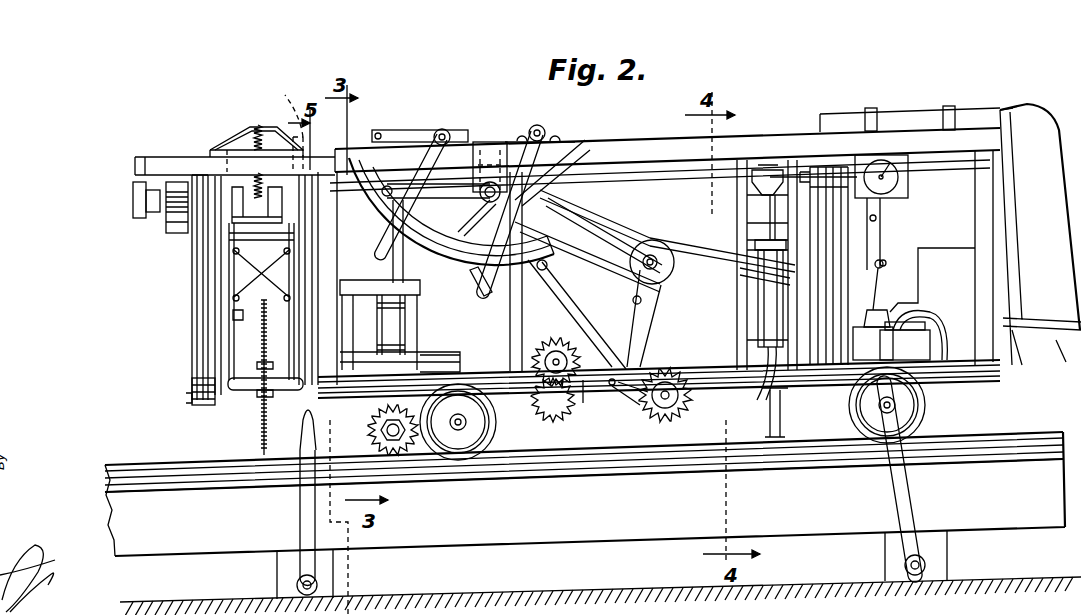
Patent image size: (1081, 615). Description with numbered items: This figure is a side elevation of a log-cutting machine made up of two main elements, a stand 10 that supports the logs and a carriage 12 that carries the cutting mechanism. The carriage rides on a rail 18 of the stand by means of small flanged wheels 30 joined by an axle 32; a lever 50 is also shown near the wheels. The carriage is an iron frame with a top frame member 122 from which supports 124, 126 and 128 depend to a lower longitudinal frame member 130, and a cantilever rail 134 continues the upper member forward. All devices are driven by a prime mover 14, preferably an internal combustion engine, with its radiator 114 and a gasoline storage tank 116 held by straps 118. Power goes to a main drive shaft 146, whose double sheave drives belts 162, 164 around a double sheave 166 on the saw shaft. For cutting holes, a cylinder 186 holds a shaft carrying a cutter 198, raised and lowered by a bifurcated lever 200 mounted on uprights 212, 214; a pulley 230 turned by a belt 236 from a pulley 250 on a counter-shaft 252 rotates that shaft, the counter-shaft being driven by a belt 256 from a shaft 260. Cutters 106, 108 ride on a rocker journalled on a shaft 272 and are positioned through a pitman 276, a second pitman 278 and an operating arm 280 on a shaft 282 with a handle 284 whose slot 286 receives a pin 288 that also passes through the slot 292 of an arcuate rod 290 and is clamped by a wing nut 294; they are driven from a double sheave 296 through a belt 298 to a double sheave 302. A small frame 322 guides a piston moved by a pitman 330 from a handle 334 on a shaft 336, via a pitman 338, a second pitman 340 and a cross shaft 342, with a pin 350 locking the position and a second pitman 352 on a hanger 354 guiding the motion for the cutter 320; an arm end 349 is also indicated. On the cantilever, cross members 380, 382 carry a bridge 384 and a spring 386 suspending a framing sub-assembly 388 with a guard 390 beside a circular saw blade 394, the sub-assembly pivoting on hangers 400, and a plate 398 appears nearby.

The stand 10 is at (105, 456).
The carriage 12 is at (140, 278).
The prime mover 14 is at (928, 247).
The rail 18 is at (135, 465).
The flanged wheel 30 is at (926, 408).
The axle 32 is at (880, 412).
The lever 50 is at (915, 498).
The cutter 106 is at (560, 397).
The blade 108 is at (693, 410).
The radiator 114 is at (1044, 126).
The gasoline storage tank 116 is at (918, 113).
The strap 118 is at (870, 108).
The top frame member 122 is at (752, 139).
The support 124 is at (980, 200).
The upright 126 is at (515, 341).
The support 128 is at (326, 165).
The lower longitudinal frame member 130 is at (815, 380).
The cantilever rail 134 is at (150, 160).
The main drive shaft 146 is at (640, 185).
The belt 162 is at (200, 260).
The belt 164 is at (198, 292).
The double sheave 166 is at (188, 405).
The cylinder 186 is at (762, 385).
The cutter 198 is at (773, 437).
The bifurcated lever 200 is at (770, 168).
The upright 212 is at (795, 267).
The upright 214 is at (740, 283).
The pulley 230 is at (770, 255).
The belt 236 is at (690, 244).
The pulley 250 is at (647, 253).
The counter-shaft 252 is at (652, 255).
The belt 256 is at (575, 210).
The shaft 260 is at (560, 180).
The shaft 272 is at (612, 386).
The pitman 276 is at (622, 330).
The second pitman 278 is at (600, 264).
The operating arm 280 is at (568, 152).
The shaft 282 is at (545, 130).
The handle 284 is at (534, 128).
The slot 286 is at (485, 296).
The pin 288 is at (475, 283).
The arcuate rod 290 is at (470, 253).
The slot 292 is at (440, 240).
The wing nut 294 is at (580, 245).
The double sheave 296 is at (480, 142).
The belt 298 is at (583, 395).
The double sheave 302 is at (620, 400).
The cutter 320 is at (368, 432).
The small frame 322 is at (412, 320).
The pitman 330 is at (387, 268).
The handle 334 is at (425, 150).
The shaft 336 is at (443, 130).
The pitman 338 is at (390, 133).
The second pitman 340 is at (380, 175).
The cross shaft 342 is at (480, 192).
The arm end 349 is at (378, 250).
The pin 350 is at (385, 238).
The second pitman 352 is at (470, 205).
The hanger 354 is at (490, 150).
The cross member 380 is at (298, 106).
The cross member 382 is at (227, 172).
The bridge 384 is at (240, 137).
The spring 386 is at (262, 124).
The framing sub-assembly 388 is at (237, 315).
The guard 390 is at (240, 392).
The circular saw blade 394 is at (266, 447).
The plate 398 is at (227, 172).
The hanger 400 is at (268, 178).